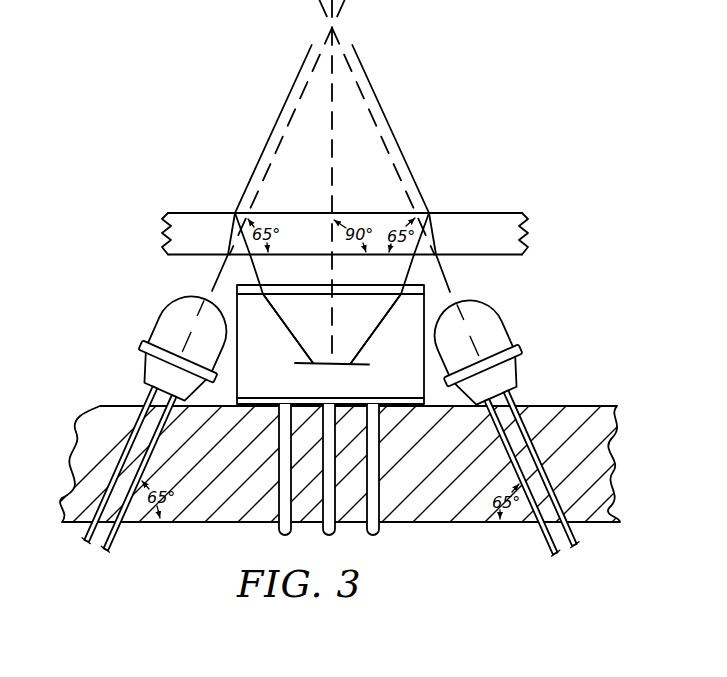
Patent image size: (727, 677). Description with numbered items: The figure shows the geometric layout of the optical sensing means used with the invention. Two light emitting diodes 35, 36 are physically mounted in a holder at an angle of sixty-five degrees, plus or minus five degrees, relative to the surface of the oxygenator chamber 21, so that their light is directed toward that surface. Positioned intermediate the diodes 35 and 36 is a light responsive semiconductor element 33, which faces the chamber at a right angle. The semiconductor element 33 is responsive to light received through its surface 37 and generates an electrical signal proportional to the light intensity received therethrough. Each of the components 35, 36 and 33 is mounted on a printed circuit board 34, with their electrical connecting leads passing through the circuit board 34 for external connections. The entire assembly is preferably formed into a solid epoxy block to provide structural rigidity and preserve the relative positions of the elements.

The oxygenator chamber 21 is at (478, 233).
The light responsive semiconductor element 33 is at (263, 380).
The printed circuit board 34 is at (556, 427).
The light emitting diode 35 is at (163, 316).
The light emitting diode 36 is at (504, 323).
The surface 37 is at (345, 283).